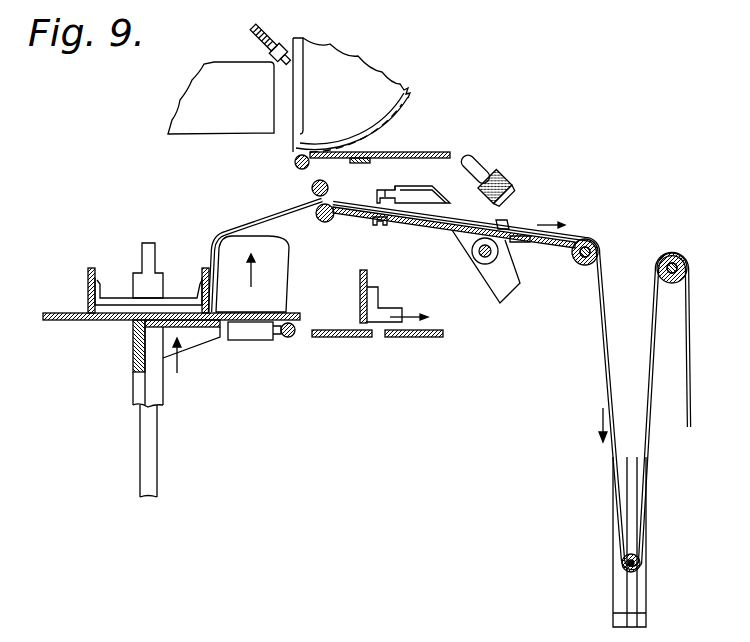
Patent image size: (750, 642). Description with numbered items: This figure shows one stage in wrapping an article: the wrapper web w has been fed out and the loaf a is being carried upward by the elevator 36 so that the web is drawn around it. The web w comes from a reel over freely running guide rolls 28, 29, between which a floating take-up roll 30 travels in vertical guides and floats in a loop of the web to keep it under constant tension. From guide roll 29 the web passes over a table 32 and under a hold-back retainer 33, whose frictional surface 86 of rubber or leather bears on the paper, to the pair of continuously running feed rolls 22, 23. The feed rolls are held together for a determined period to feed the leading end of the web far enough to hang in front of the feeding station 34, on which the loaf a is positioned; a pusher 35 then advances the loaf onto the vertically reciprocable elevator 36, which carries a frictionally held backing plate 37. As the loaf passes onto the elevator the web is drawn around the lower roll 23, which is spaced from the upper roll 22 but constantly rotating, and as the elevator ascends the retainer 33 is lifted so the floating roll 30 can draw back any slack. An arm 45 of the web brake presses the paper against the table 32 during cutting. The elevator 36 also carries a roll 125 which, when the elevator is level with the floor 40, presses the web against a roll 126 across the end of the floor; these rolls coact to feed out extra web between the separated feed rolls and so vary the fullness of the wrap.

The upper feed roll 22 is at (312, 191).
The lower feed roll 23 is at (329, 222).
The guide roll 28 is at (685, 240).
The guide roll 29 is at (579, 266).
The floating take-up roll 30 is at (643, 562).
The table 32 is at (550, 243).
The retainer 33 is at (524, 212).
The feeding station 34 is at (362, 338).
The pusher 35 is at (368, 286).
The elevator 36 is at (112, 323).
The backing plate 37 is at (203, 272).
The floor 40 is at (433, 152).
The brake arm 45 is at (402, 191).
The frictional surface 86 is at (492, 188).
The elevator roll 125 is at (289, 340).
The floor-end roll 126 is at (295, 163).
The wrapper web w is at (258, 225).
The loaf a is at (275, 268).